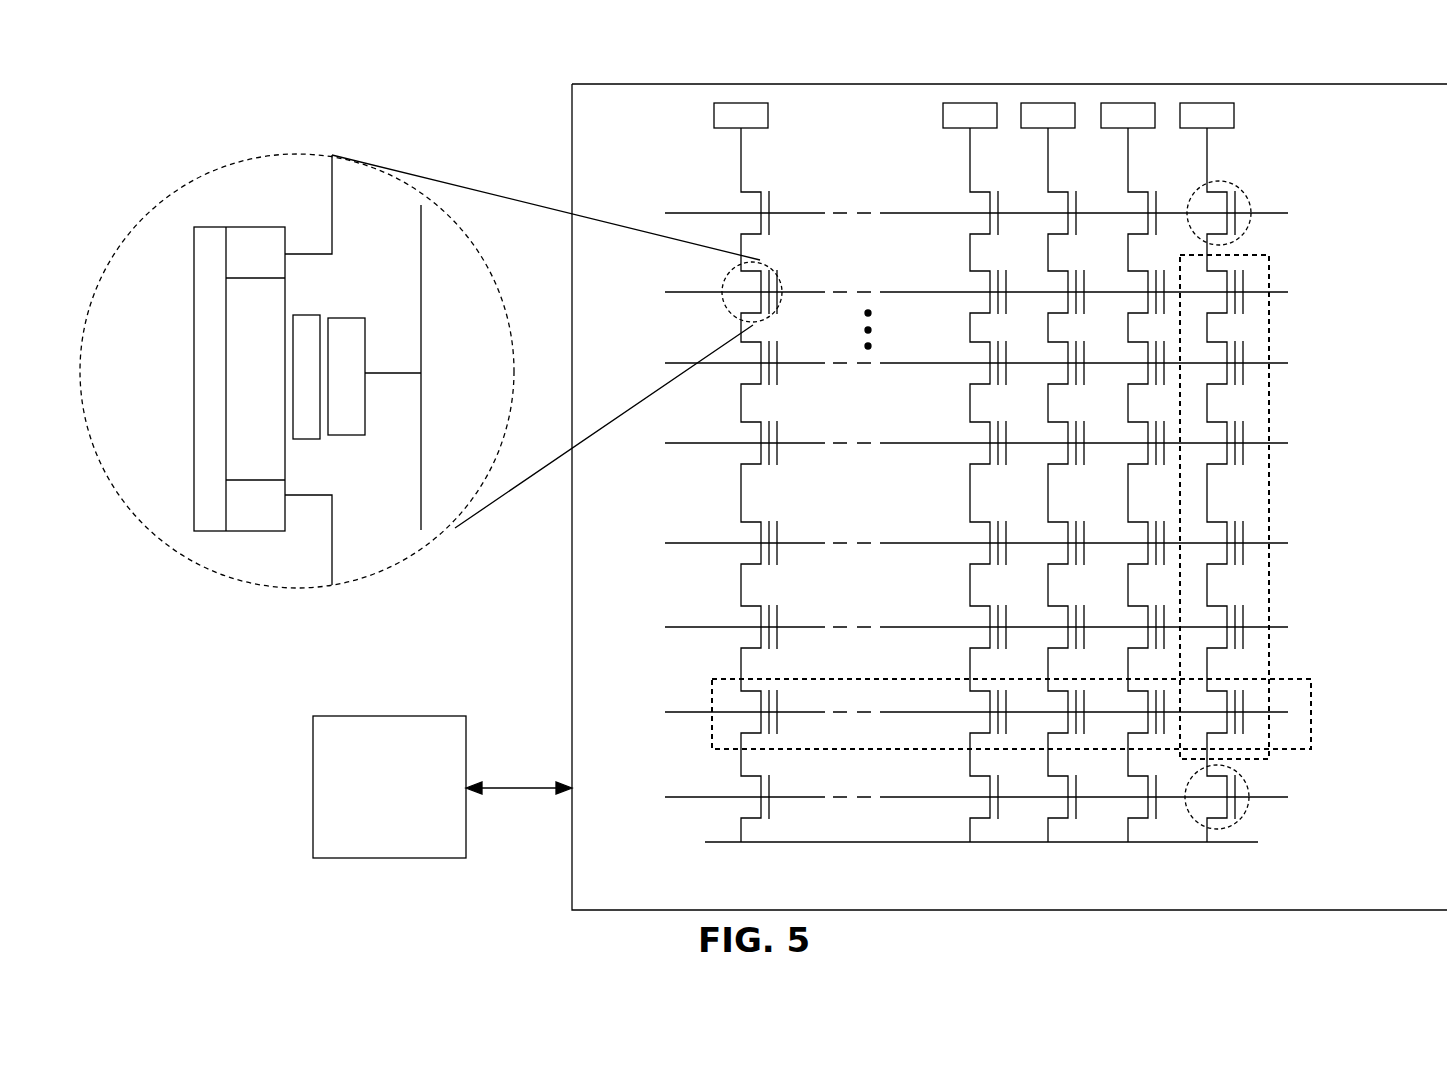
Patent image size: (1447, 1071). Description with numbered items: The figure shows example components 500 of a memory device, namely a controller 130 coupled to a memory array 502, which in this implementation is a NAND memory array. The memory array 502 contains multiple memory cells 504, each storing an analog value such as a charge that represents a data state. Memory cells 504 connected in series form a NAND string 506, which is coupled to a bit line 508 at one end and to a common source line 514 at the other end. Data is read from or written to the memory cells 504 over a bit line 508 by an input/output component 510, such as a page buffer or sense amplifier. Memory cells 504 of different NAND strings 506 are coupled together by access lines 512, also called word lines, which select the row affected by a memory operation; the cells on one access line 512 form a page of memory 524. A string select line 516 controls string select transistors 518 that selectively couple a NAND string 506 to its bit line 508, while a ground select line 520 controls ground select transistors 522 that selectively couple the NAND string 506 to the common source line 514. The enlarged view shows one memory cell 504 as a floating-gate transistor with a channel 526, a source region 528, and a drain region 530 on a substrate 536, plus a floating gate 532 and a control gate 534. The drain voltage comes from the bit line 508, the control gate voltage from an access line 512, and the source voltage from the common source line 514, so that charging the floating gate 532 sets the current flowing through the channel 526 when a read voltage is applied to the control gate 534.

The example components 500 is at (182, 72).
The memory array 502 is at (572, 96).
The memory cell 504 is at (782, 284).
The NAND string 506 is at (1269, 330).
The bit line 508 is at (1208, 158).
The input/output component 510 is at (1235, 110).
The access line 512 is at (680, 713).
The common source line 514 is at (830, 845).
The string select line 516 is at (705, 211).
The string select transistor 518 is at (1243, 235).
The ground select line 520 is at (680, 797).
The ground select transistor 522 is at (1245, 812).
The page of memory 524 is at (1311, 690).
The channel 526 is at (254, 386).
The source region 528 is at (275, 492).
The drain region 530 is at (273, 251).
The floating gate 532 is at (306, 314).
The control gate 534 is at (343, 436).
The substrate 536 is at (212, 420).
The controller 130 is at (442, 787).